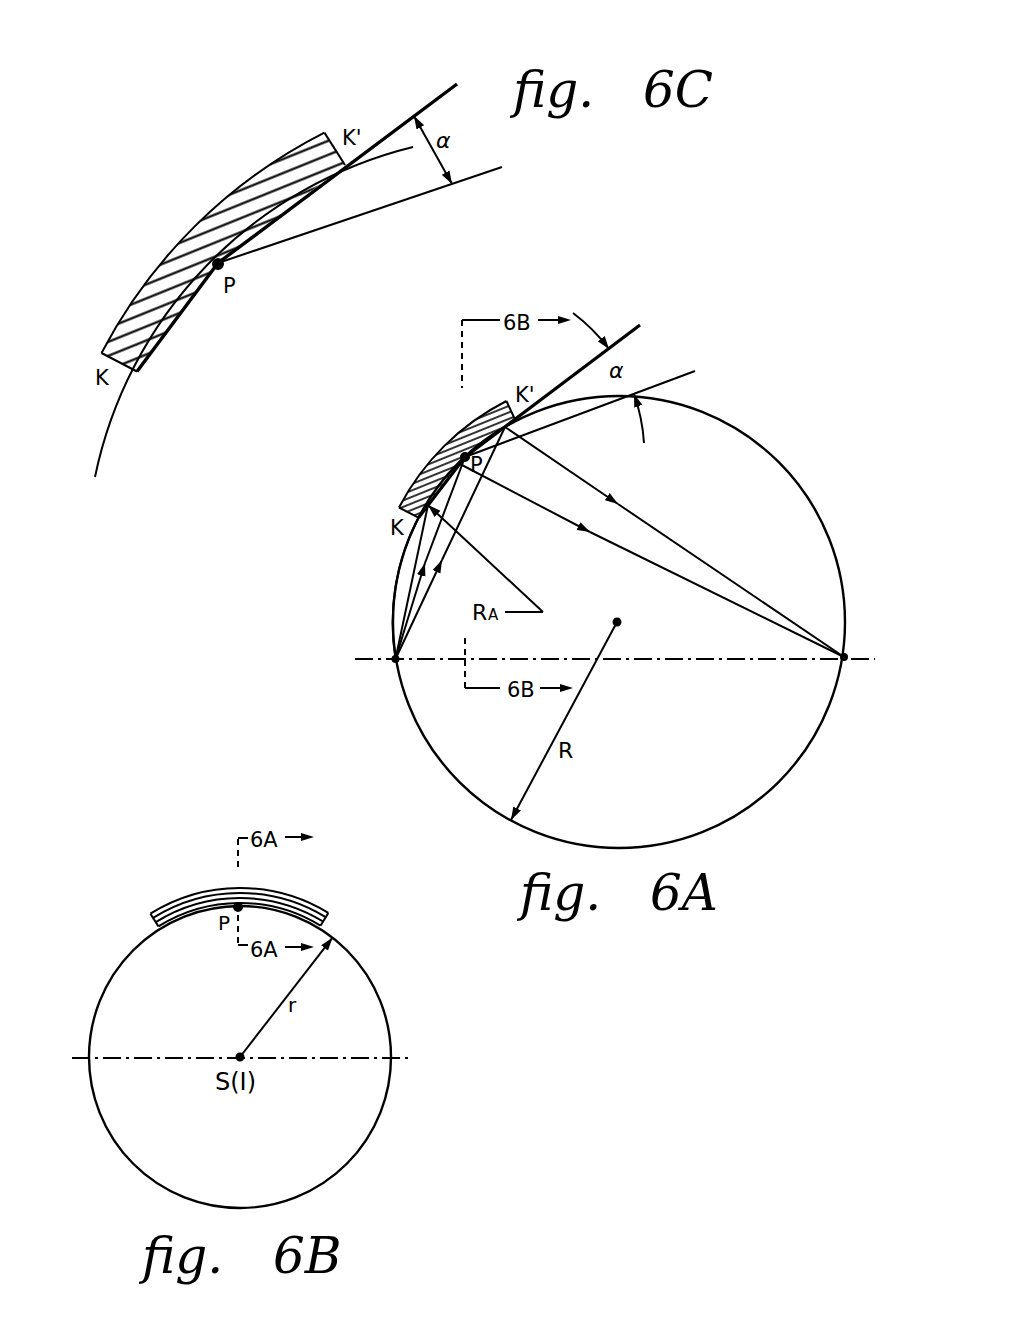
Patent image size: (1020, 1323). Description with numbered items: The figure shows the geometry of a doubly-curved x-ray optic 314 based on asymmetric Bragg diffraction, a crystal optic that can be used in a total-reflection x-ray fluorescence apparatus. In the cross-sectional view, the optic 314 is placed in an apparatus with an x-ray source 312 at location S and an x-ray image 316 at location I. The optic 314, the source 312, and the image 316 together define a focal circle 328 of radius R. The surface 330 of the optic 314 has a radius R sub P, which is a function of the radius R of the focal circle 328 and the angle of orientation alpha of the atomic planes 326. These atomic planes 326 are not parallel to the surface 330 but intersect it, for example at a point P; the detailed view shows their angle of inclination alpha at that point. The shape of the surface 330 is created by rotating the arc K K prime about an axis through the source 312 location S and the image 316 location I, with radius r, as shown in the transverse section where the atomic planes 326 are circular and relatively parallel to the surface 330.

In FIG. 6A, the x-ray source 312 is at (388, 655).
In FIG. 6A, the optic 314 is at (444, 452).
In FIG. 6B, the optic 314 is at (305, 903).
In FIG. 6C, the optic 314 is at (190, 230).
In FIG. 6A, the x-ray image 316 is at (845, 657).
In FIG. 6A, the atomic planes 326 is at (484, 414).
In FIG. 6C, the atomic planes 326 is at (270, 187).
In FIG. 6A, the focal circle 328 is at (744, 430).
In FIG. 6A, the surface 330 is at (403, 547).
In FIG. 6B, the surface 330 is at (203, 910).
In FIG. 6C, the surface 330 is at (140, 370).